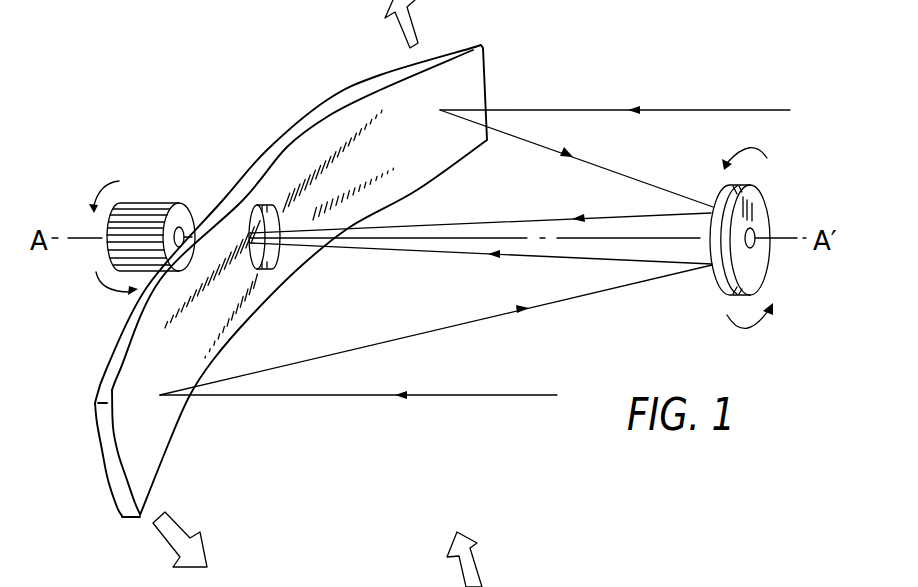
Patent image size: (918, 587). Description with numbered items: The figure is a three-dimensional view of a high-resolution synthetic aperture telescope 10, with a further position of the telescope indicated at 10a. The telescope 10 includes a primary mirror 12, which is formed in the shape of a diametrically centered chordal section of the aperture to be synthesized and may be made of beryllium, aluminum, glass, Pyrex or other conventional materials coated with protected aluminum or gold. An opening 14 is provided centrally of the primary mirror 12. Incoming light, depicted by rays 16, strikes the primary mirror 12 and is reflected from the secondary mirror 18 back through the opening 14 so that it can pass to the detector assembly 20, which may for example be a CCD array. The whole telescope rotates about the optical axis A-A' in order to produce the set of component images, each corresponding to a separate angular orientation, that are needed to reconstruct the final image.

The high-resolution synthetic aperture telescope 10 is at (586, 63).
The optical scanning system (alternate position) 10a is at (682, 577).
The primary mirror 12 is at (174, 446).
The opening 14 is at (275, 253).
The rays 16 is at (685, 110).
The secondary mirror 18 is at (764, 222).
The detector assembly 20 is at (152, 203).